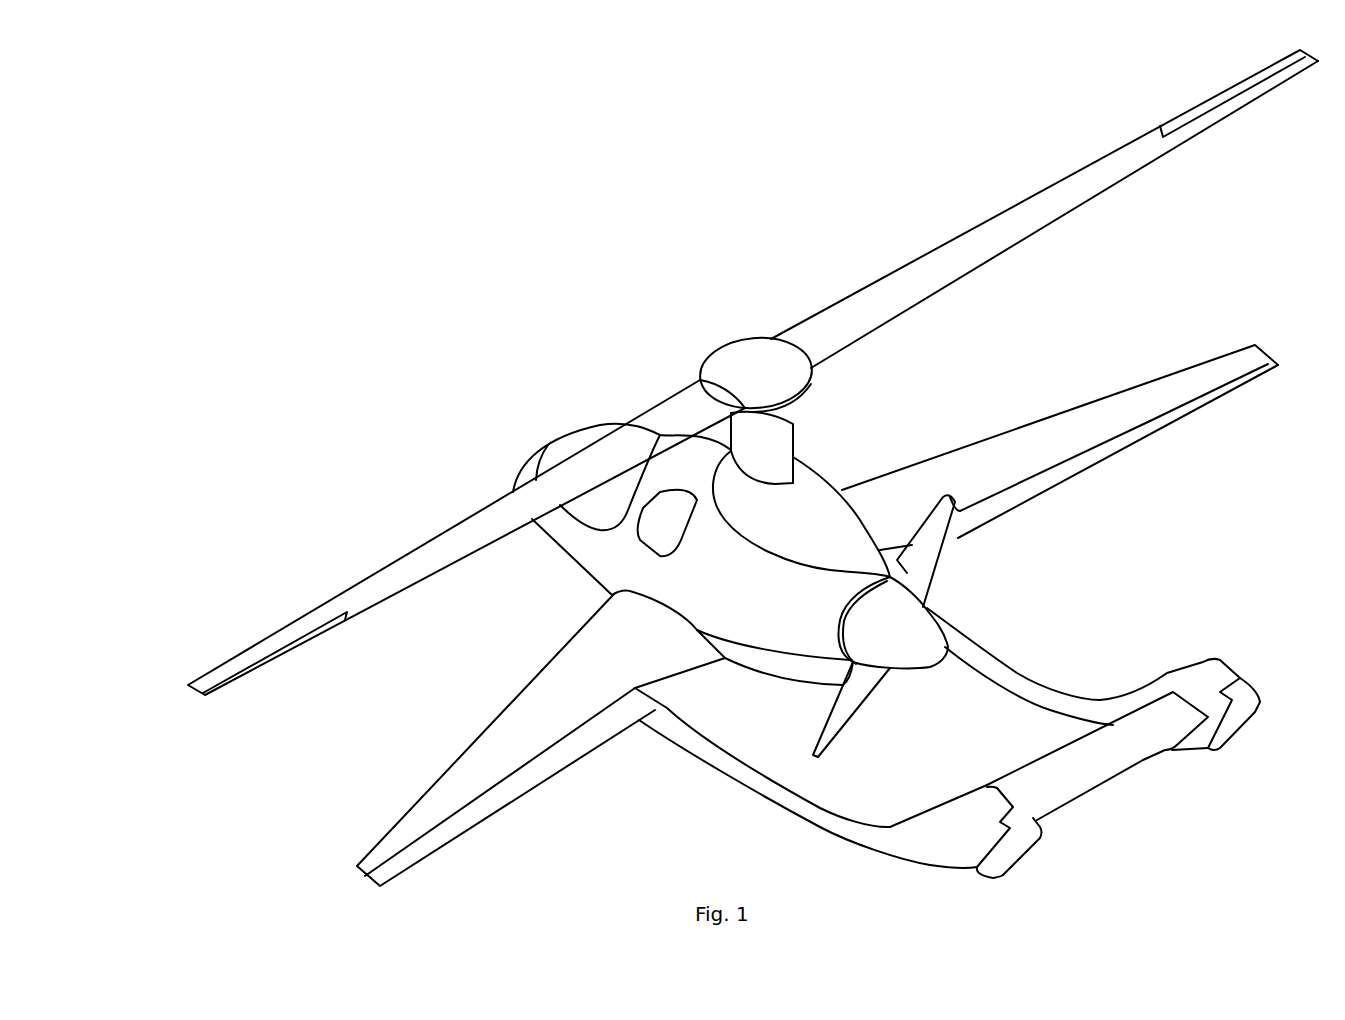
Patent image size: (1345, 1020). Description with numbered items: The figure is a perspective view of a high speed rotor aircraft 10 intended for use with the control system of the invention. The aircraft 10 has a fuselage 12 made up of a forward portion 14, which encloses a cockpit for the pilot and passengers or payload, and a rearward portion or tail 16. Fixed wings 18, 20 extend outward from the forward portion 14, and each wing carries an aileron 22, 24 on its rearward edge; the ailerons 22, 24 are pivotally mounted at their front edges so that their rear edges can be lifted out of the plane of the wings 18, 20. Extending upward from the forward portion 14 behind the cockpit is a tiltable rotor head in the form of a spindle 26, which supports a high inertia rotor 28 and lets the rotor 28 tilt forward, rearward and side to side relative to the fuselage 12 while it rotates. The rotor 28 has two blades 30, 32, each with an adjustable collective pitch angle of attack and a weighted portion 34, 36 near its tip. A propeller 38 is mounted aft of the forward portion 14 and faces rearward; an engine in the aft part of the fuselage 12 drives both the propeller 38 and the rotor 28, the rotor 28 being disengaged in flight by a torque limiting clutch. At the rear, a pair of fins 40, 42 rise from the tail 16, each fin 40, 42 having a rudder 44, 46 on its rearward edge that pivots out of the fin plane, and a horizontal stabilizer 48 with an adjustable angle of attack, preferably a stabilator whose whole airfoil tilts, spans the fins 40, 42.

The high speed rotor aircraft 10 is at (706, 334).
The fuselage 12 is at (605, 567).
The forward portion 14 is at (543, 545).
The tail 16 is at (767, 792).
The fixed wing 18 is at (513, 750).
The fixed wing 20 is at (1070, 435).
The aileron 22 is at (458, 830).
The aileron 24 is at (1212, 393).
The spindle 26 is at (797, 420).
The high inertia rotor 28 is at (977, 255).
The rotor blade 30 is at (447, 550).
The rotor blade 32 is at (1090, 185).
The weighted portion 34 is at (270, 655).
The weighted portion 36 is at (1160, 128).
The propeller 38 is at (927, 578).
The fin 40 is at (950, 845).
The fin 42 is at (1217, 670).
The rudder 44 is at (1025, 843).
The rudder 46 is at (1233, 718).
The horizontal stabilizer 48 is at (1090, 787).